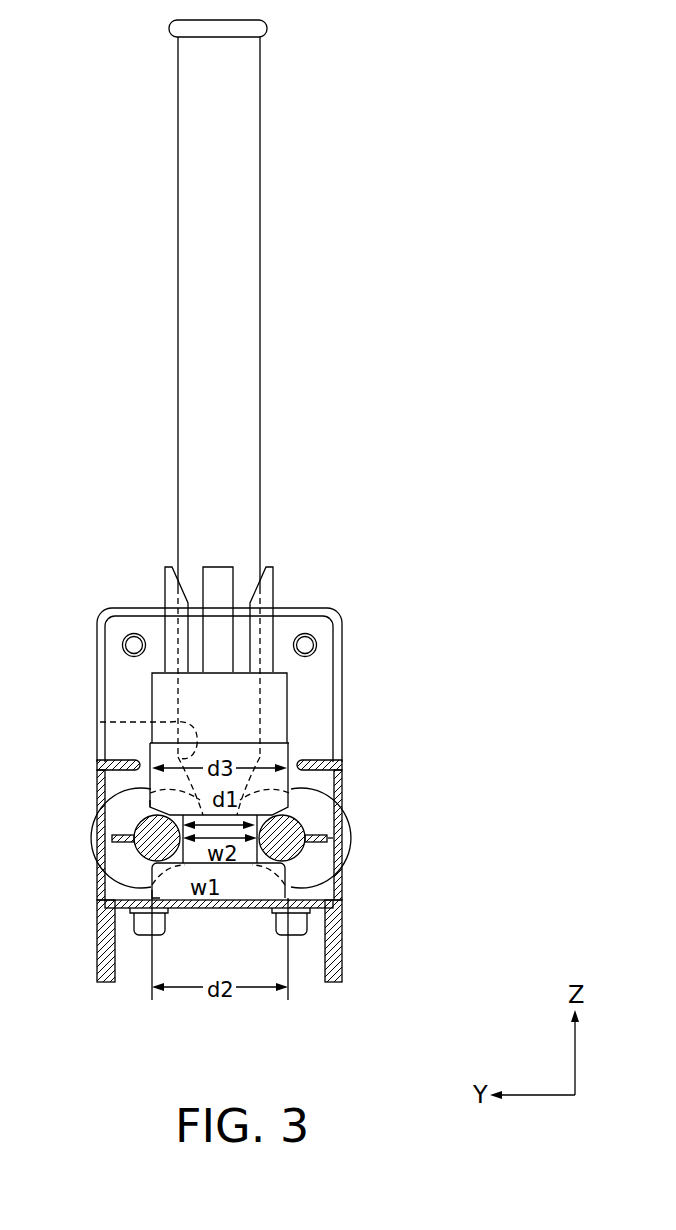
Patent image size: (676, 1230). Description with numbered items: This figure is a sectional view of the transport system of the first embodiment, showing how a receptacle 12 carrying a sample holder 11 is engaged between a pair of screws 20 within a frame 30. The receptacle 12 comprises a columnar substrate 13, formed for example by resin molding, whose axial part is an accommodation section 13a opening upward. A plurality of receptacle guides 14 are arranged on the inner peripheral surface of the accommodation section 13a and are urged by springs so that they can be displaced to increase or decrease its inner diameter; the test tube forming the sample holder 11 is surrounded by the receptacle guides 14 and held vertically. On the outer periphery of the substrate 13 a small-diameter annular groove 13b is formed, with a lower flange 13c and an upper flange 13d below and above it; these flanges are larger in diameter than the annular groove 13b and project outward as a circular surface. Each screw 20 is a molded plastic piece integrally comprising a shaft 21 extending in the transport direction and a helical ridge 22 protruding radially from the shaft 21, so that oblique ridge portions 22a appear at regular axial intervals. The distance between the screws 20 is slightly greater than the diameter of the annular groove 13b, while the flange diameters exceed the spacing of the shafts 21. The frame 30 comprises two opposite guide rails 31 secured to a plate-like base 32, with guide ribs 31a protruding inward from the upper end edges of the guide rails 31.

The sample holder 11 is at (258, 263).
The receptacle 12 is at (411, 642).
The substrate 13 is at (290, 715).
The accommodation section 13a is at (100, 722).
The annular groove 13b is at (183, 872).
The flange 13c is at (142, 900).
The flange 13d is at (125, 798).
The receptacle guides 14 is at (273, 588).
The screw 20 is at (328, 838).
The shaft 21 is at (293, 853).
The helical ridge 22 is at (315, 817).
The oblique ridge portions 22a is at (298, 793).
The frame 30 is at (411, 967).
The guide rails 31 is at (343, 797).
The guide ribs 31a is at (302, 763).
The base 32 is at (232, 908).